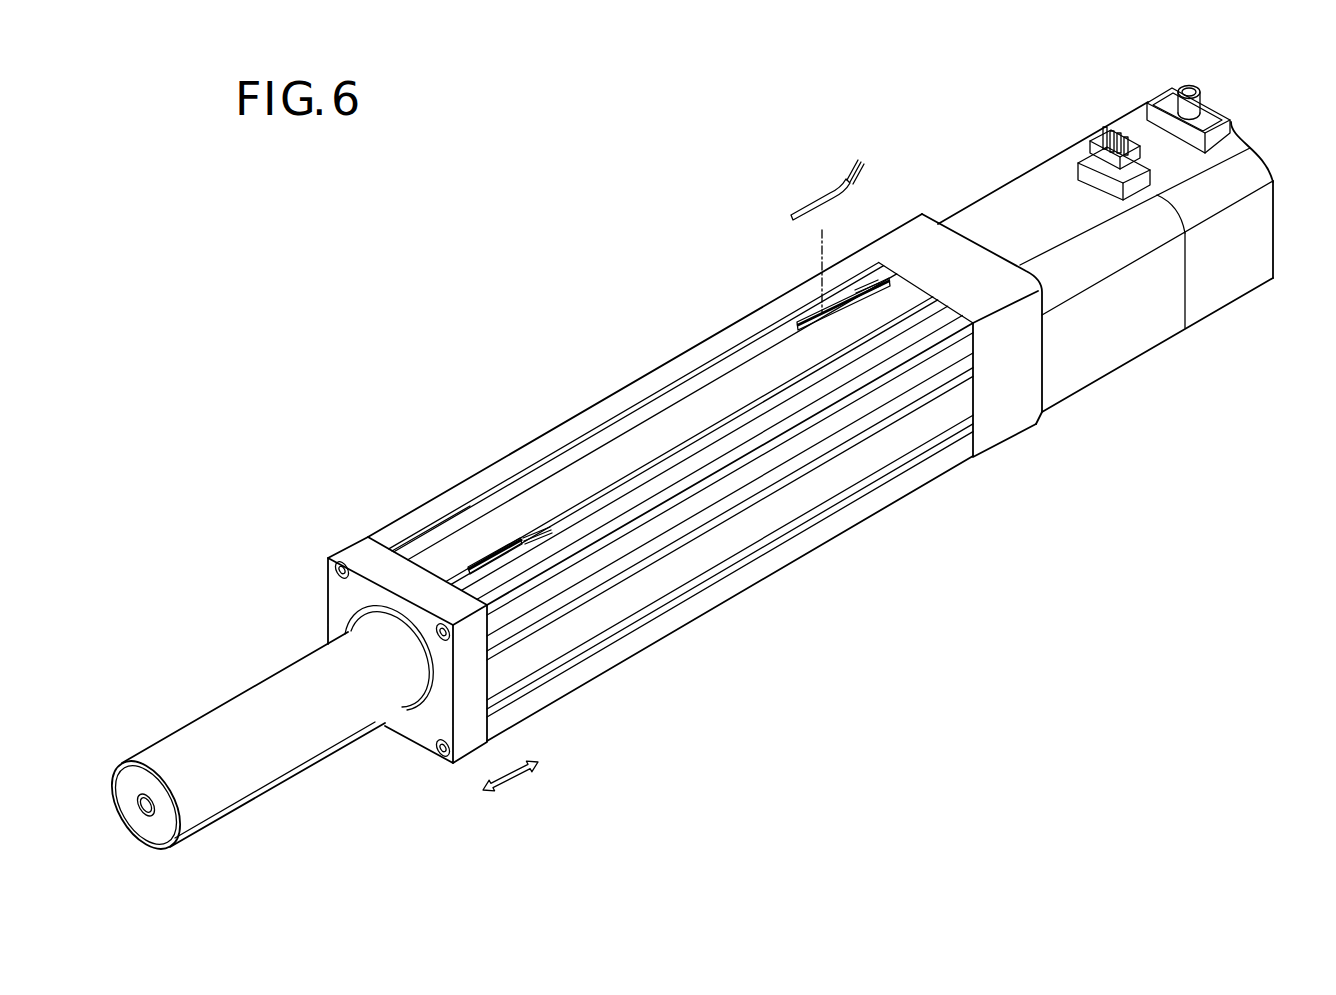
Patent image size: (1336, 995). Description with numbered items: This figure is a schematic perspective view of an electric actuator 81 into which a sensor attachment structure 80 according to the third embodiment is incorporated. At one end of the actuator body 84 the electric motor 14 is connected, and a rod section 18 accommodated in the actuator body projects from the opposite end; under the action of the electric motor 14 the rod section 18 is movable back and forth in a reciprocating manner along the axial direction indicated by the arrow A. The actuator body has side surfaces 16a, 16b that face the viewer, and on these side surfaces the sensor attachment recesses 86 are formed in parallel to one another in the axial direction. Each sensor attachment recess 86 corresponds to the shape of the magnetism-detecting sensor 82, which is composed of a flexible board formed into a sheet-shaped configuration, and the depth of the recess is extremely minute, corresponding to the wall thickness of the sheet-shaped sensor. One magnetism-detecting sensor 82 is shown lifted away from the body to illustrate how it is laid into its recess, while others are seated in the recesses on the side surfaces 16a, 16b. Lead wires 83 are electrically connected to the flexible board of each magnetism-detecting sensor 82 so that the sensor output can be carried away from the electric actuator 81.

The electric motor 14 is at (1000, 183).
The side surface 16a is at (617, 453).
The side surface 16b is at (647, 588).
The rod section 18 is at (334, 733).
The sensor attachment structure 80 is at (777, 323).
The electric actuator 81 is at (652, 156).
The magnetism-detecting sensor 82 is at (828, 199).
The lead wires 83 is at (848, 180).
The actuator body 84 is at (528, 443).
The sensor attachment recess 86 is at (703, 437).